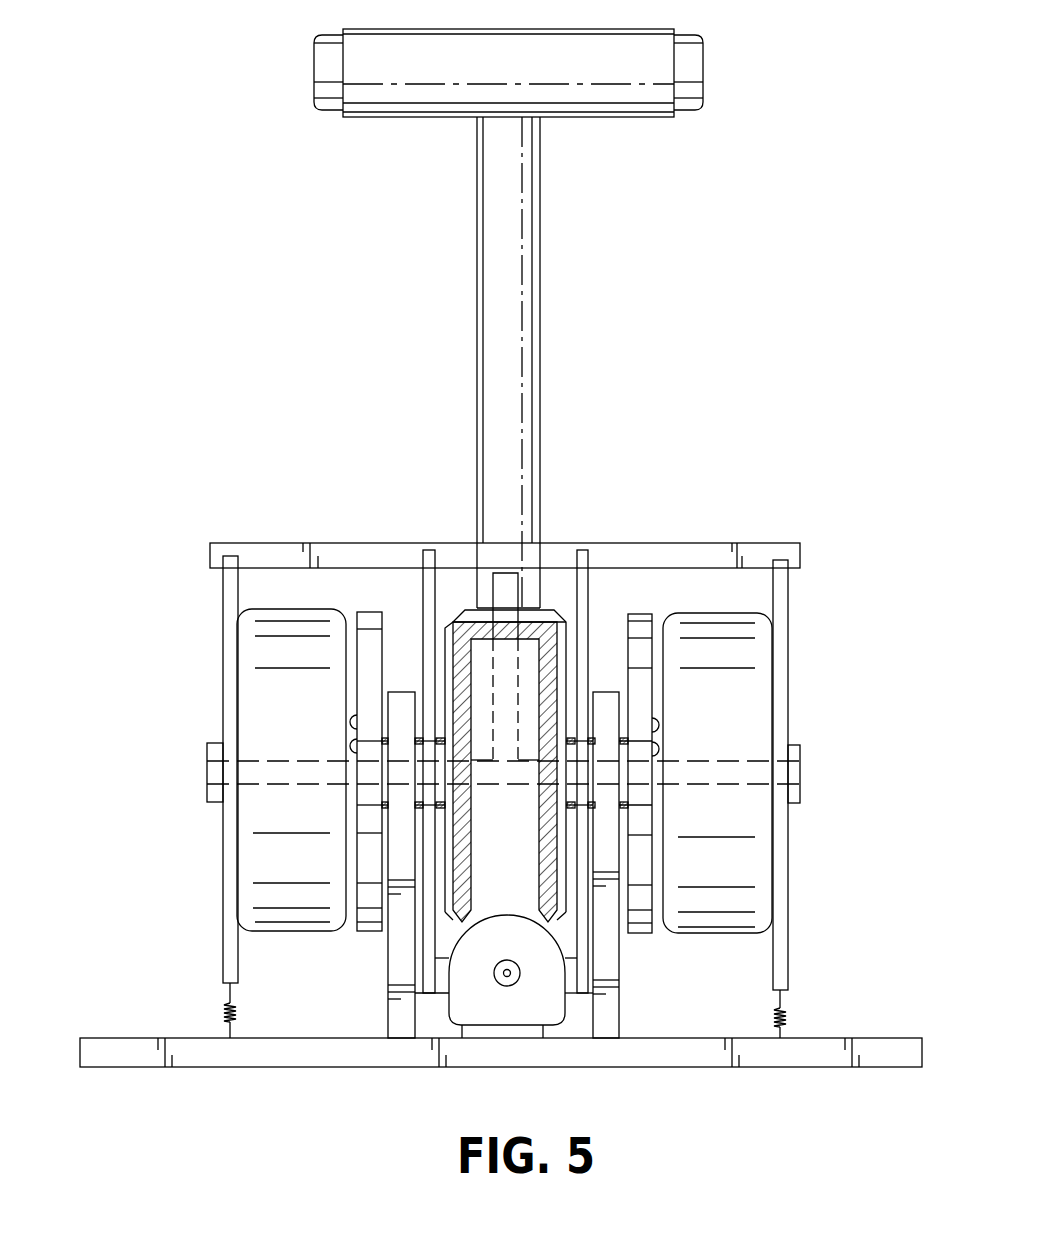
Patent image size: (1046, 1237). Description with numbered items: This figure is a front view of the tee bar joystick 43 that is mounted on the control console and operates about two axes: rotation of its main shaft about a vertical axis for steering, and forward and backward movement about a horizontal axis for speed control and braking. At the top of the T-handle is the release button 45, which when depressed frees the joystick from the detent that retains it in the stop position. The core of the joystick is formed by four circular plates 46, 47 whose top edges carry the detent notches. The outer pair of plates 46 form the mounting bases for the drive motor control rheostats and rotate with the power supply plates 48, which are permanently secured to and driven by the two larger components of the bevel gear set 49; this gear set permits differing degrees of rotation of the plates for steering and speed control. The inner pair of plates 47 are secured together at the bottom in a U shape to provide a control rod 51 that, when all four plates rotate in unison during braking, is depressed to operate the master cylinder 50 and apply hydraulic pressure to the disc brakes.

The tee bar joystick 43 is at (477, 285).
The release button 45 is at (313, 76).
The circular plates (outer pair) 46 is at (228, 613).
The circular plates (inner pair) 47 is at (428, 602).
The power supply plates 48 is at (365, 622).
The bevel gear set 49 is at (548, 612).
The master cylinder 50 is at (520, 948).
The control rod 51 is at (568, 987).